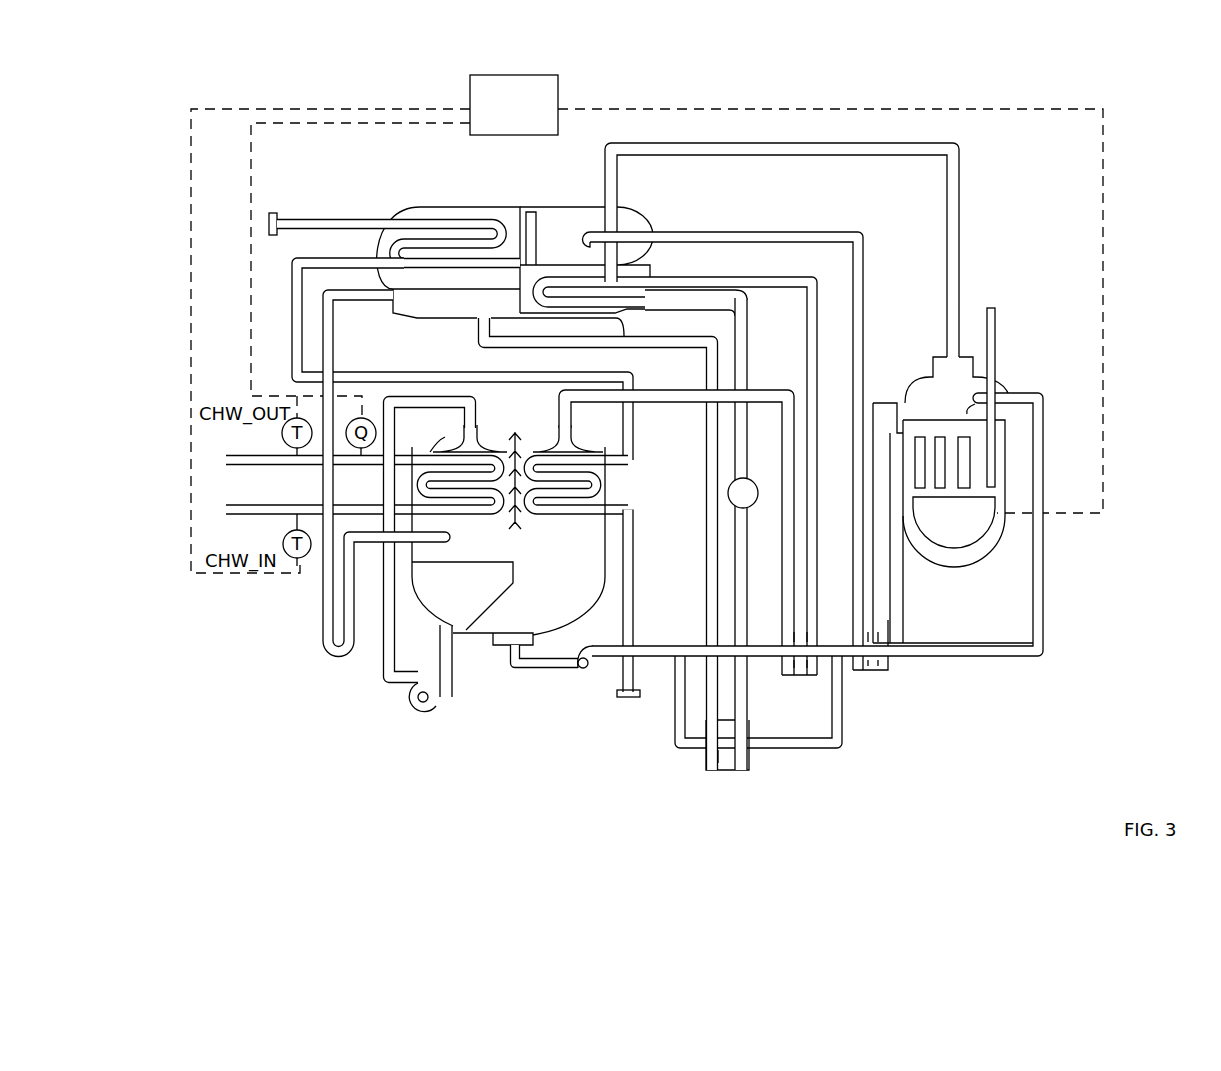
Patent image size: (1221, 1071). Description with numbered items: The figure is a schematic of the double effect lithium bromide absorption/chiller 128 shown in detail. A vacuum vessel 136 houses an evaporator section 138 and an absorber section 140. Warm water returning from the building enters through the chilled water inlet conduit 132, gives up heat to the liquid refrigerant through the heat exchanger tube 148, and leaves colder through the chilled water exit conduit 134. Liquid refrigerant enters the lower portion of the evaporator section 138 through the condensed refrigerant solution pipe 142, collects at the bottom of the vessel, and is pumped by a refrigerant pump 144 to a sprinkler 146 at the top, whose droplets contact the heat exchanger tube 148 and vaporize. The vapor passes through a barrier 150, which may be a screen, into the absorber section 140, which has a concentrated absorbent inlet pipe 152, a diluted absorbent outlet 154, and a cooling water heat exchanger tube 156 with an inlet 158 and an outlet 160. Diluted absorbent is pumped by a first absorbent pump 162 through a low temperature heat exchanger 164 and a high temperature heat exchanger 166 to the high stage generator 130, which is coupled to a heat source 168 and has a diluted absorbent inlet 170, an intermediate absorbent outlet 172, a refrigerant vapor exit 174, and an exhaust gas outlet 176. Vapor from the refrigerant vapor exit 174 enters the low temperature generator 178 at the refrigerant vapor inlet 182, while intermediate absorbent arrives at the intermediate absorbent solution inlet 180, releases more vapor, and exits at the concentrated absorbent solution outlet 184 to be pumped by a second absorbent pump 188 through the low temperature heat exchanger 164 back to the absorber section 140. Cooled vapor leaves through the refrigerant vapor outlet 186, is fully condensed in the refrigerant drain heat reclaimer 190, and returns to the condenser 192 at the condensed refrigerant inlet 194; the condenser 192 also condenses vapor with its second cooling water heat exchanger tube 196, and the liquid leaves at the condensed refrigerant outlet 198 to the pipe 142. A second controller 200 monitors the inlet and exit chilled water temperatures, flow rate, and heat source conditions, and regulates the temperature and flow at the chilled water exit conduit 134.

The absorption/chiller 128 is at (1012, 100).
The high stage generator 130 is at (839, 460).
The chilled water inlet conduit 132 is at (278, 513).
The chilled water exit conduit 134 is at (264, 456).
The vacuum vessel 136 is at (579, 622).
The evaporator section 138 is at (455, 501).
The absorber section 140 is at (578, 501).
The condensed refrigerant solution pipe 142 is at (322, 604).
The refrigerant pump 144 is at (436, 706).
The sprinkler 146 is at (489, 433).
The heat exchanger tube 148 is at (417, 456).
The barrier 150 is at (518, 523).
The concentrated absorbent inlet pipe 152 is at (582, 405).
The diluted absorbent outlet 154 is at (535, 670).
The cooling water heat exchanger tube 156 is at (604, 482).
The inlet 158 is at (634, 525).
The outlet 160 is at (636, 440).
The first absorbent pump 162 is at (583, 668).
The low temperature heat exchanger 164 is at (780, 676).
The high temperature heat exchanger 166 is at (888, 665).
The heat source 168 is at (954, 493).
The diluted absorbent inlet 170 is at (1030, 393).
The intermediate absorbent outlet 172 is at (893, 567).
The refrigerant vapor exit 174 is at (947, 352).
The exhaust gas outlet 176 is at (990, 305).
The low temperature generator 178 is at (446, 244).
The intermediate absorbent solution inlet 180 is at (672, 229).
The refrigerant vapor inlet 182 is at (650, 143).
The concentrated absorbent solution outlet 184 is at (675, 280).
The refrigerant vapor outlet 186 is at (645, 312).
The second absorbent pump 188 is at (760, 506).
The refrigerant drain heat reclaimer 190 is at (752, 763).
The condenser 192 is at (500, 271).
The condensed refrigerant inlet 194 is at (484, 350).
The second cooling water heat exchanger tube 196 is at (457, 220).
The condensed refrigerant outlet 198 is at (360, 308).
The second controller 200 is at (514, 105).